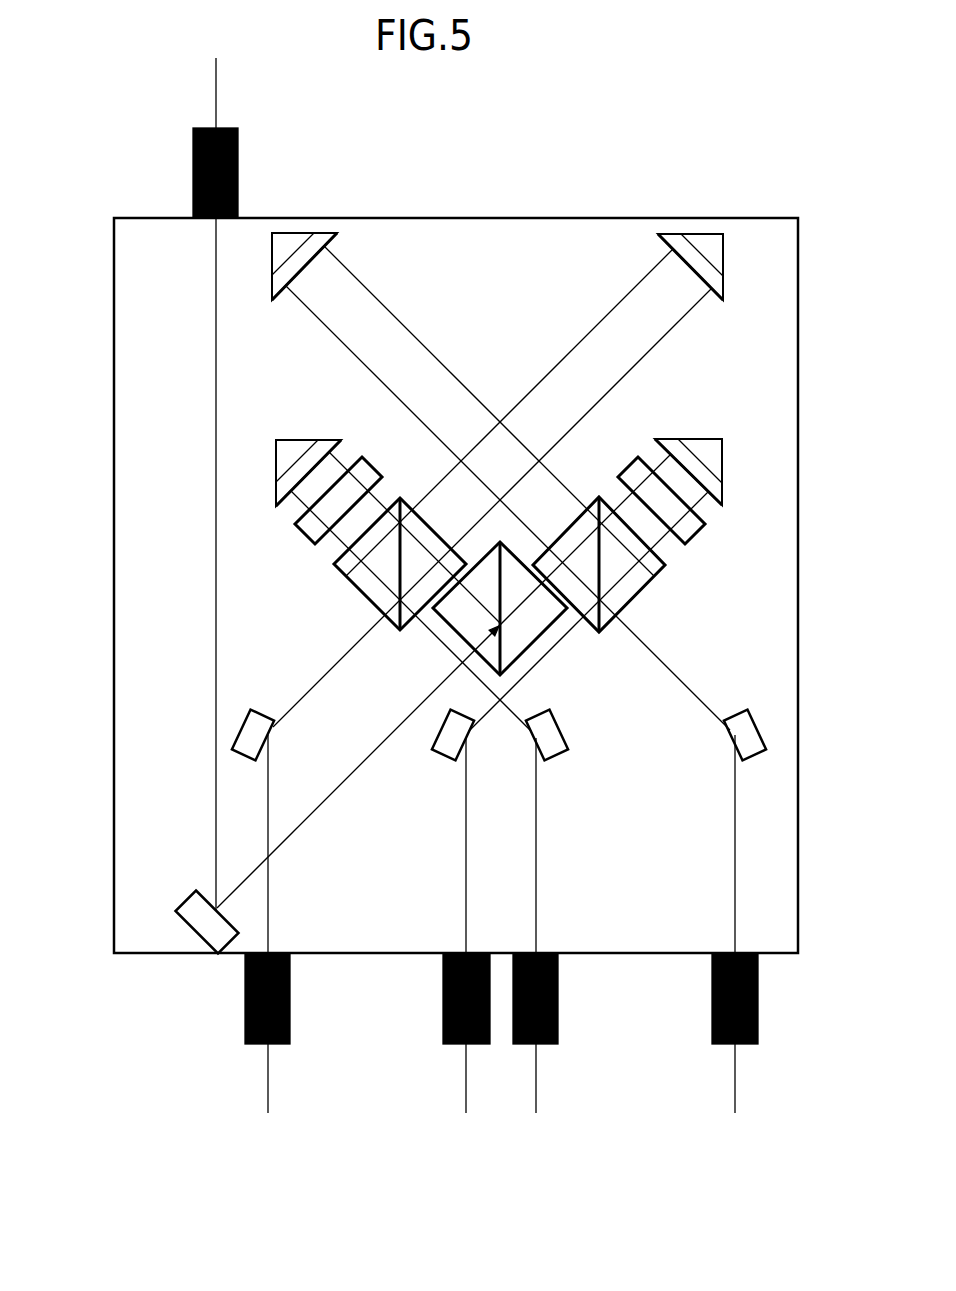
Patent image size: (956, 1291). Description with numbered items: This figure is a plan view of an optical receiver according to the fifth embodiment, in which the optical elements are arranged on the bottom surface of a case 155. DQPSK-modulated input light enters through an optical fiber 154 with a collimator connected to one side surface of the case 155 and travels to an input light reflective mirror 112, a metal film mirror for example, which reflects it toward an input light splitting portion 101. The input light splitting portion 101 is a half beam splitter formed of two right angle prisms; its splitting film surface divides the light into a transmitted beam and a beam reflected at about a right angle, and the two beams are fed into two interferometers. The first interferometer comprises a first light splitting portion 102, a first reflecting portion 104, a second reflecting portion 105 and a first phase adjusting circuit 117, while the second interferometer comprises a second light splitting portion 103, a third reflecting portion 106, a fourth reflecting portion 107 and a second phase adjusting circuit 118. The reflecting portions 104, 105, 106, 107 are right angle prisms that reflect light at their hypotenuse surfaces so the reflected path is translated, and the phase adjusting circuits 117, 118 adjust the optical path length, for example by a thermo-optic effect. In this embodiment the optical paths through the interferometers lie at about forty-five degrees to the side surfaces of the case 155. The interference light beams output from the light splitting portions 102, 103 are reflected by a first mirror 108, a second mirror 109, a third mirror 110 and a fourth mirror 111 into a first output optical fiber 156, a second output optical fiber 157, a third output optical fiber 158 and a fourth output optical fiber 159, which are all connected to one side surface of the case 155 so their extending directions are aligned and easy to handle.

The input light splitting portion 101 is at (535, 650).
The first light splitting portion 102 is at (353, 584).
The second light splitting portion 103 is at (647, 584).
The first reflecting portion 104 is at (286, 440).
The second reflecting portion 105 is at (724, 252).
The third reflecting portion 106 is at (698, 440).
The fourth reflecting portion 107 is at (271, 252).
The first mirror 108 is at (254, 708).
The second mirror 109 is at (556, 762).
The third mirror 110 is at (443, 762).
The fourth mirror 111 is at (755, 762).
The input light reflective mirror 112 is at (188, 896).
The first phase adjusting circuit 117 is at (310, 546).
The second phase adjusting circuit 118 is at (690, 546).
The optical fiber with collimator 154 is at (238, 150).
The case 155 is at (112, 760).
The first output optical fiber 156 is at (290, 1016).
The second output optical fiber 157 is at (558, 1005).
The third output optical fiber 158 is at (442, 980).
The fourth output optical fiber 159 is at (758, 1003).